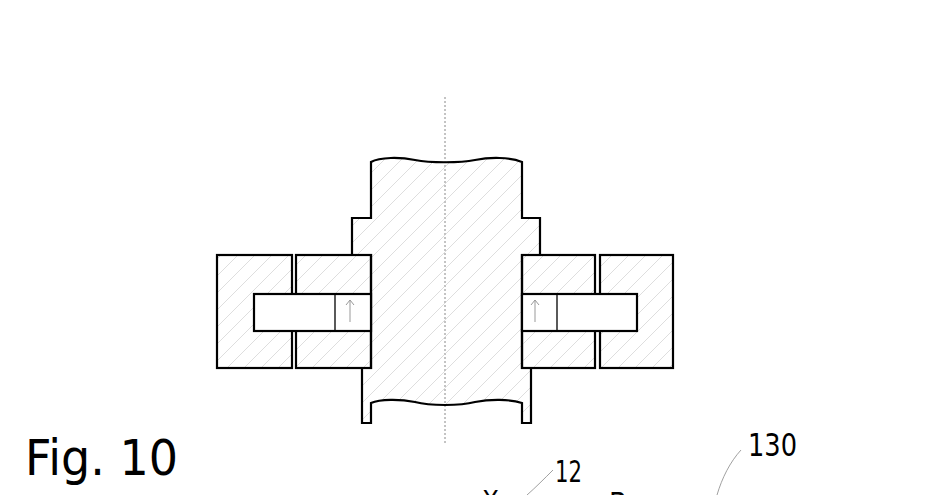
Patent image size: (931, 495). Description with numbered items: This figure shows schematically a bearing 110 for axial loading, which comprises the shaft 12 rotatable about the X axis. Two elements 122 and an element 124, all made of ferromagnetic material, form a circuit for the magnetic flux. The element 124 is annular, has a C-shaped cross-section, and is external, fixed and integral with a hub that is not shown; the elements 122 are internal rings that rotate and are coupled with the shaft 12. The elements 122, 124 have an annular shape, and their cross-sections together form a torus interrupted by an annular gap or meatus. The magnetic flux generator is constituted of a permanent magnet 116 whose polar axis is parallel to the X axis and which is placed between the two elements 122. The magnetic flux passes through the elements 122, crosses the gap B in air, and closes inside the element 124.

The bearing 110 is at (648, 88).
The shaft 12 is at (498, 227).
The permanent magnet 116 is at (347, 308).
The elements 122 is at (318, 253).
The element 124 is at (243, 253).
The gap B is at (600, 248).
The X axis X is at (447, 110).